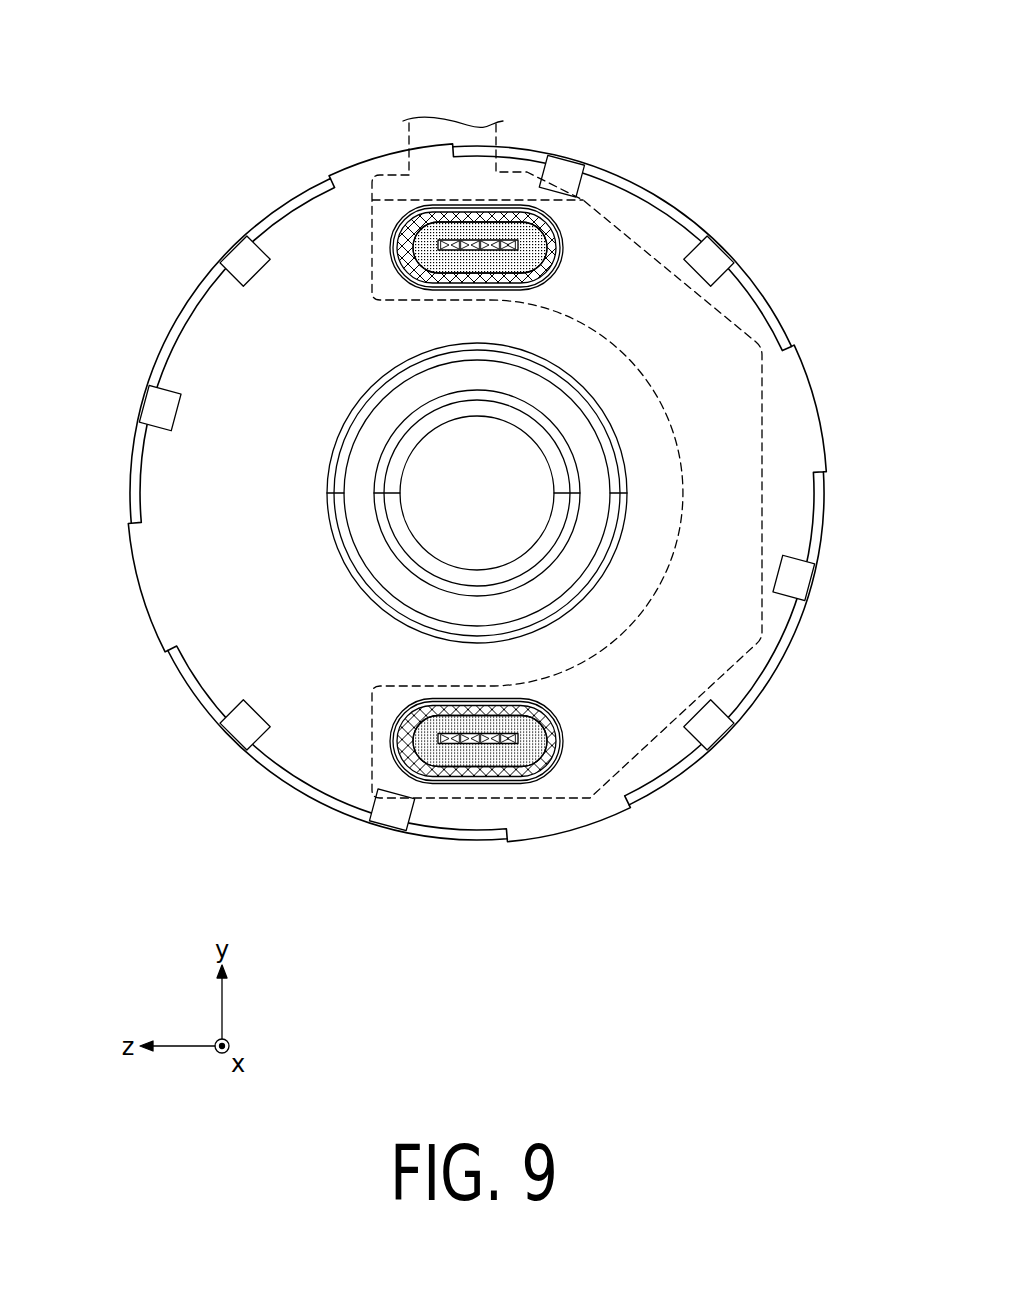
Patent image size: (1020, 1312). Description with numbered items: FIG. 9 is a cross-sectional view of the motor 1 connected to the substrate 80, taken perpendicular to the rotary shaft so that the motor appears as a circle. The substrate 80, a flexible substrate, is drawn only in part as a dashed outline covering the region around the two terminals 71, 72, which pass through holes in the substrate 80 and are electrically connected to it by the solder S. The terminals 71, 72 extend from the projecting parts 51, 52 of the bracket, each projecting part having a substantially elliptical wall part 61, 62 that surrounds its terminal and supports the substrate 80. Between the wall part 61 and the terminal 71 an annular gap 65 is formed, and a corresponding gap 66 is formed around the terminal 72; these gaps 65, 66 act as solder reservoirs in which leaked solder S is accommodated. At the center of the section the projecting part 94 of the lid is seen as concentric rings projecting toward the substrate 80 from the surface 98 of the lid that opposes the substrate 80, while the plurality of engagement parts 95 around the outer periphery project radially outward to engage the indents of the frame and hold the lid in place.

The motor 1 is at (309, 99).
The projecting part 51 is at (453, 154).
The projecting part 52 is at (477, 838).
The wall part 61 is at (528, 208).
The wall part 62 is at (528, 785).
The gap 65 is at (489, 230).
The gap 66 is at (490, 757).
The terminal 71 is at (440, 246).
The terminal 72 is at (515, 745).
The substrate 80 is at (762, 418).
The projecting part 94 is at (438, 465).
The engagement parts 95 is at (143, 583).
The surface 98 is at (224, 379).